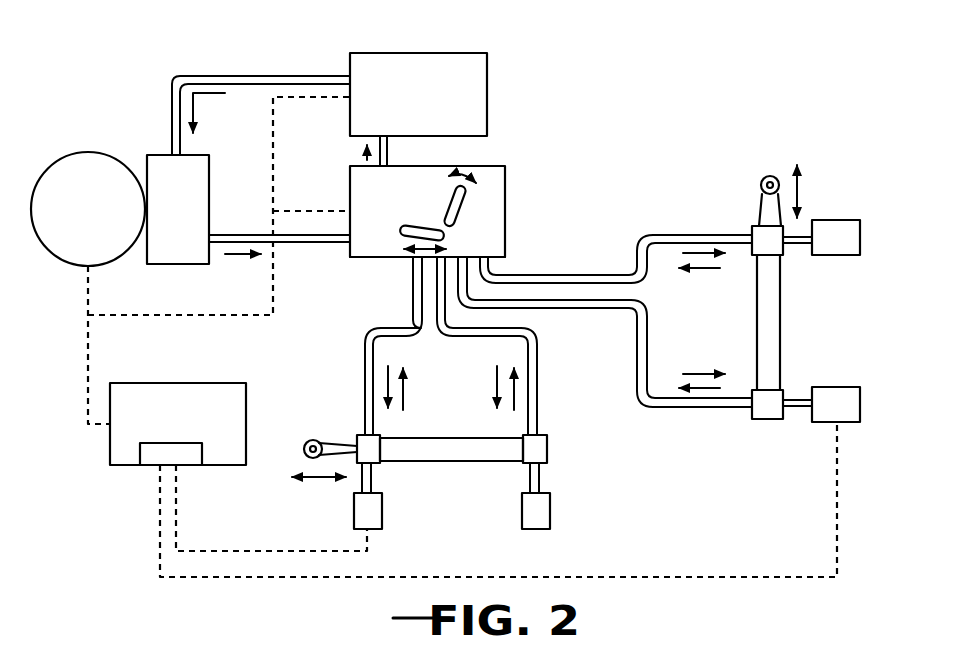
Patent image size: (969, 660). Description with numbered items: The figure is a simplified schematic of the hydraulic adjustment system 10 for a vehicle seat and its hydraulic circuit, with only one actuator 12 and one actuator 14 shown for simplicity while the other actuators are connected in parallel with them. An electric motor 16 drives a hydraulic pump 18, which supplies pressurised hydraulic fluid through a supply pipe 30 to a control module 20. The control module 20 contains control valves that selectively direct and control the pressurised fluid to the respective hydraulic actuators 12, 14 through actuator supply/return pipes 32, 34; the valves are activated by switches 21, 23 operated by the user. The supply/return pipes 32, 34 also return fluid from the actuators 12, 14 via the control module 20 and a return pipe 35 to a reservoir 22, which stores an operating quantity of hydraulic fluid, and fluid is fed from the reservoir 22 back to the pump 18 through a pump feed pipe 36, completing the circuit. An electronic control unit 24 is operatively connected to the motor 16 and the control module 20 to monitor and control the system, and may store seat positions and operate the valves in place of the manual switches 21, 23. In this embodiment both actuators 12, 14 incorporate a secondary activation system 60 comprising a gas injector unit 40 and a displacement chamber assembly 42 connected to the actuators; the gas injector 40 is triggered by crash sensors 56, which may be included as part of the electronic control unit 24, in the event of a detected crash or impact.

The hydraulic adjustment system 10 is at (636, 138).
The actuator 12 is at (432, 435).
The actuator 14 is at (770, 326).
The electric motor 16 is at (41, 240).
The hydraulic pump 18 is at (147, 156).
The control module 20 is at (505, 186).
The switch 21 is at (463, 207).
The reservoir 22 is at (350, 62).
The switch 23 is at (462, 236).
The electronic control unit 24 is at (110, 455).
The supply pipe 30 is at (362, 258).
The supply/return pipes 32 is at (363, 383).
The supply/return pipes 34 is at (665, 235).
The return pipe 35 is at (388, 150).
The pump feed pipe 36 is at (213, 75).
The gas injector unit 40 is at (354, 512).
The displacement chamber assembly 42 is at (550, 513).
The crash sensors 56 is at (155, 466).
The secondary activation system 60 is at (395, 516).